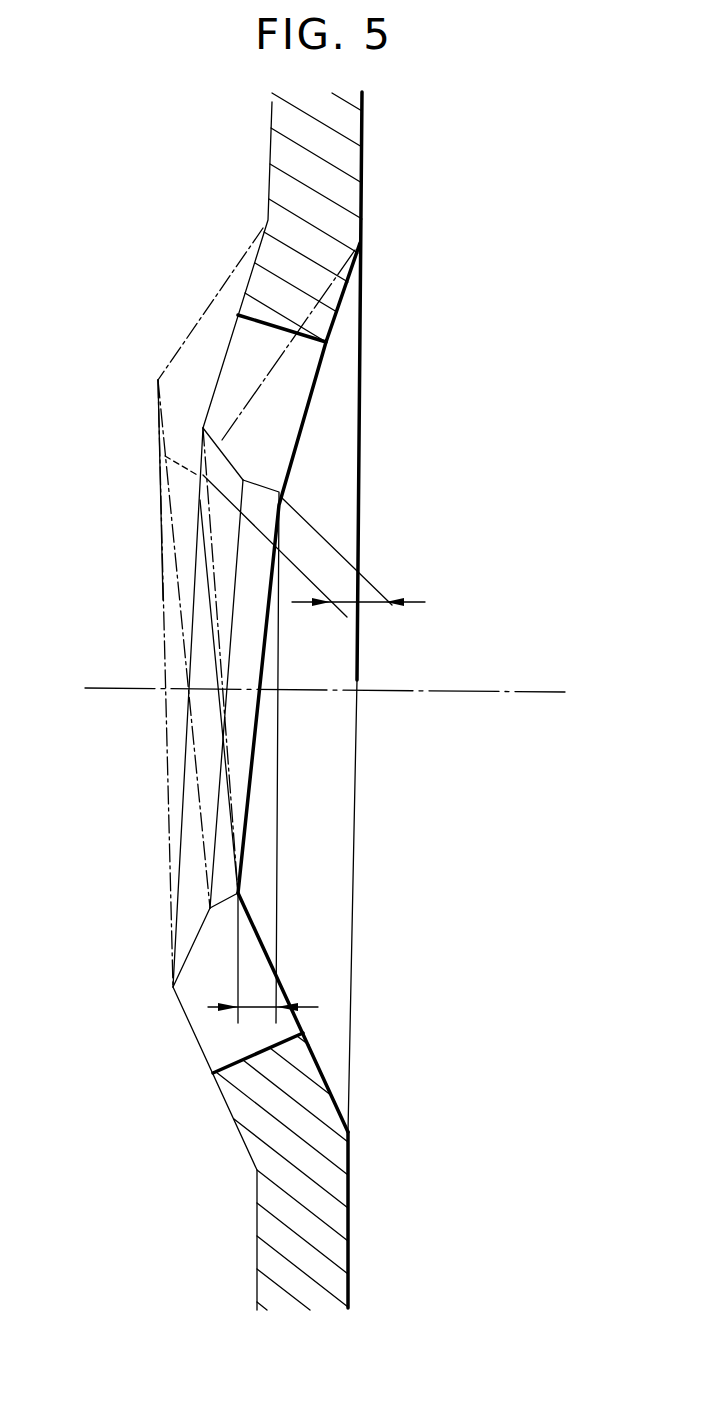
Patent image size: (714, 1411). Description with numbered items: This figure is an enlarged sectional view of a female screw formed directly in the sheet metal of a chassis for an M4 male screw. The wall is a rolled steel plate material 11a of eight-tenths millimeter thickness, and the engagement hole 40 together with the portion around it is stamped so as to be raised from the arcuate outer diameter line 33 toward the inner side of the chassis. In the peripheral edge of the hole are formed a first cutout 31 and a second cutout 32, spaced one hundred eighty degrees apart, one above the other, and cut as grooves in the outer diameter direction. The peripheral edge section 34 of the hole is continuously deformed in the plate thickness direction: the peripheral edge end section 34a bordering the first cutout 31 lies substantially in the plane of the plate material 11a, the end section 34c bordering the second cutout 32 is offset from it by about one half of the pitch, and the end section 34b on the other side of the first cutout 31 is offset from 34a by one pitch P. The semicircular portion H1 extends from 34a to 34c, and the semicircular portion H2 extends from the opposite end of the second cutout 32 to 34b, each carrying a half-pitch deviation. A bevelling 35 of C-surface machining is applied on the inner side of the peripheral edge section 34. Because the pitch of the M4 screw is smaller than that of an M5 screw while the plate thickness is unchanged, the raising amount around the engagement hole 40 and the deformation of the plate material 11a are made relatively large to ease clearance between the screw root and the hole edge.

The plate material 11a is at (327, 1218).
The arcuate outer diameter line 33 is at (268, 220).
The first cutout 31 is at (300, 372).
The second cutout 32 is at (220, 1052).
The peripheral edge section 34 is at (240, 782).
The peripheral edge end section 34a is at (260, 486).
The peripheral edge end section 34b is at (198, 467).
The peripheral edge end section 34c is at (240, 893).
The bevelling 35 is at (233, 466).
The engagement hole 40 is at (158, 815).
The substantially semicircular portion H1 is at (243, 730).
The substantially semicircular portion H2 is at (185, 572).
The pitch P is at (375, 604).
The M4 screw M4 is at (354, 693).